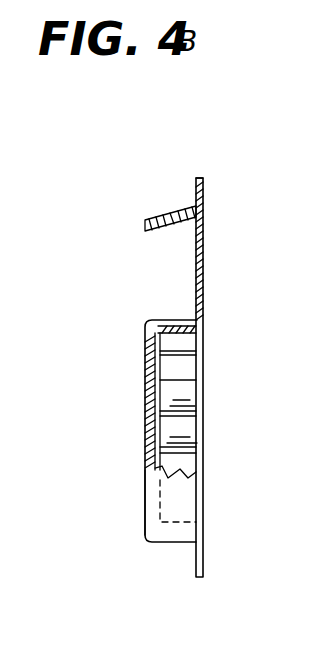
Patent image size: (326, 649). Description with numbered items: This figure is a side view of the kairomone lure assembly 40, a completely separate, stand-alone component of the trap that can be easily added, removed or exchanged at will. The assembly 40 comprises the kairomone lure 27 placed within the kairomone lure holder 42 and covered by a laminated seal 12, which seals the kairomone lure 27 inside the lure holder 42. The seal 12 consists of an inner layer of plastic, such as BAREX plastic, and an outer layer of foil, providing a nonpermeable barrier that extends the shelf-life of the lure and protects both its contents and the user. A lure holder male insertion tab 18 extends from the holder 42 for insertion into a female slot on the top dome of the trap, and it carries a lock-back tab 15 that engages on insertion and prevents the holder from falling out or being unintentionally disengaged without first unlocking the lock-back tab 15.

The seal 12 is at (206, 346).
The lock-back tab 15 is at (155, 218).
The lure holder male insertion tab 18 is at (193, 193).
The kairomone lure 27 is at (167, 329).
The kairomone lure assembly 40 is at (136, 364).
The kairomone lure holder 42 is at (145, 428).